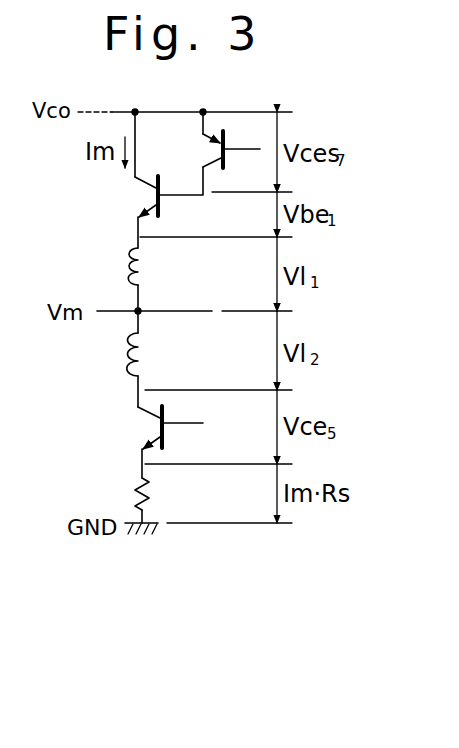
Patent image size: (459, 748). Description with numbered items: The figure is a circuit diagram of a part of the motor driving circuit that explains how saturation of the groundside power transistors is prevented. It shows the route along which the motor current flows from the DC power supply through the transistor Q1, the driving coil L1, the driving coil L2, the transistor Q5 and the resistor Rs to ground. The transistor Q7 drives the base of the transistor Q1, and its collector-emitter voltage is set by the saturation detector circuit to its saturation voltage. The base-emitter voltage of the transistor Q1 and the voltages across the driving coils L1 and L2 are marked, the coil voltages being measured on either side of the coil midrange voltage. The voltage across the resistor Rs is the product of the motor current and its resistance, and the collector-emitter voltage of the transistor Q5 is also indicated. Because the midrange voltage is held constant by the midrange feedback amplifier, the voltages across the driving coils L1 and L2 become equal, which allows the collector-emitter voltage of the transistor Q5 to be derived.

The transistor Q1 is at (152, 180).
The transistor Q7 is at (214, 140).
The transistor Q5 is at (155, 442).
The driving coil L1 is at (115, 267).
The driving coil L2 is at (115, 354).
The resistor Rs is at (122, 494).